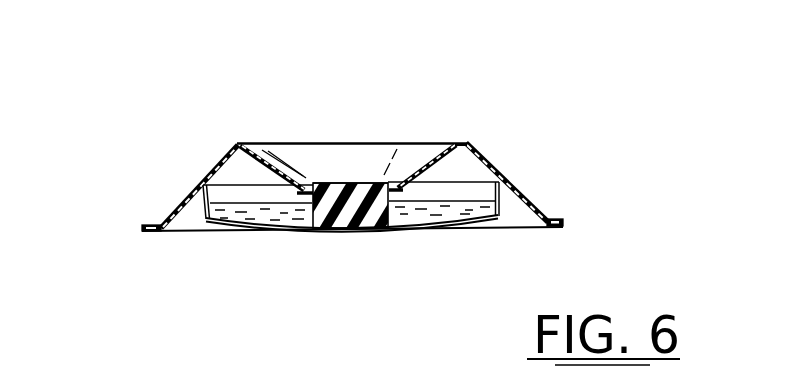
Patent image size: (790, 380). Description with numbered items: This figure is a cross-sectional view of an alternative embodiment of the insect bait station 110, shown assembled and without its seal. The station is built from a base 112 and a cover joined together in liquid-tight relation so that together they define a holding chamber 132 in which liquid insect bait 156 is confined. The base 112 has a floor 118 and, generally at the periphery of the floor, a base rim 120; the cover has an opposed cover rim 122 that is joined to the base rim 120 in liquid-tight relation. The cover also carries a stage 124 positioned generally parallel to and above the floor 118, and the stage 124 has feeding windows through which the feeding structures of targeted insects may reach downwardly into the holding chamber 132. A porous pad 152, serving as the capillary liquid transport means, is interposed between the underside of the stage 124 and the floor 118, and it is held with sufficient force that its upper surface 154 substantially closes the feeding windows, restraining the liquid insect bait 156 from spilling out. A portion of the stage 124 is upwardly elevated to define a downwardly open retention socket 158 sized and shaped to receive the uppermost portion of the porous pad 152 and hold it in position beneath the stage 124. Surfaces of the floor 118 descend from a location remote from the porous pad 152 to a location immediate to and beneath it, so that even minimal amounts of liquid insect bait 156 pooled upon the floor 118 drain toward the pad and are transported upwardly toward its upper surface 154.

The insect bait station 110 is at (178, 123).
The base 112 is at (514, 228).
The floor 118 is at (240, 227).
The base rim 120 is at (157, 232).
The cover rim 122 is at (152, 225).
The stage 124 is at (405, 184).
The holding chamber 132 is at (453, 163).
The porous pad 152 is at (388, 232).
The upper surface 154 is at (372, 183).
The liquid insect bait 156 is at (460, 200).
The retention socket 158 is at (309, 186).